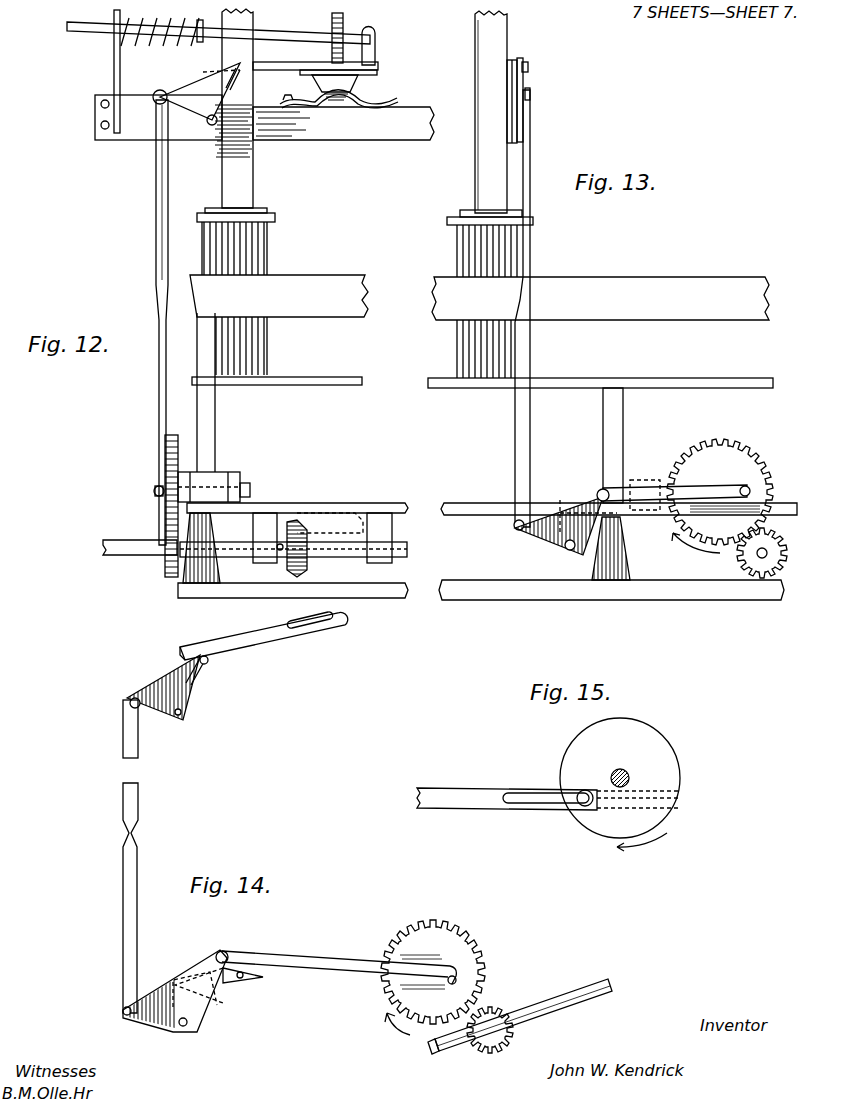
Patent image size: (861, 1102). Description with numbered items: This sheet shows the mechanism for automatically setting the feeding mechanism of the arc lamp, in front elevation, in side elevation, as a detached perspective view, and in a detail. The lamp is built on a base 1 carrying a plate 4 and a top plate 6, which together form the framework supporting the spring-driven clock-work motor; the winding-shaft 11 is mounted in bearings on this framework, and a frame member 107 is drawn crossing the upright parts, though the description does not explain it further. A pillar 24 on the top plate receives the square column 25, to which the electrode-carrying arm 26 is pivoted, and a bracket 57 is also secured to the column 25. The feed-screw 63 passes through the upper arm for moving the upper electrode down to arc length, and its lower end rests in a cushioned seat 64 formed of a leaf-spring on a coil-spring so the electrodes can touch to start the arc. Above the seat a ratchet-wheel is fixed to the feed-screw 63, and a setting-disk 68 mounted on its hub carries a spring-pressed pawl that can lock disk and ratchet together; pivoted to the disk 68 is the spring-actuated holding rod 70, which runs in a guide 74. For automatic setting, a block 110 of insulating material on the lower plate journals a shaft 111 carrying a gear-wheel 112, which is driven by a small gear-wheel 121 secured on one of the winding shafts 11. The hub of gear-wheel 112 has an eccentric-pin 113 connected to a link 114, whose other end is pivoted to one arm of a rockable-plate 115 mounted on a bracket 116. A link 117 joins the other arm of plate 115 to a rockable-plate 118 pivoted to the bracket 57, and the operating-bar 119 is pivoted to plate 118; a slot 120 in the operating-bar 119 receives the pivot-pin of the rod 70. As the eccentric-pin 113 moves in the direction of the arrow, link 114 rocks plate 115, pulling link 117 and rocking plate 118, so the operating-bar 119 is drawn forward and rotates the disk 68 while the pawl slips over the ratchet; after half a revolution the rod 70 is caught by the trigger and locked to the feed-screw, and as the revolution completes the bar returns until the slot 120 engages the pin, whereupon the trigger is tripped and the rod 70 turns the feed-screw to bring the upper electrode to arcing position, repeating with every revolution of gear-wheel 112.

In FIG. 12, the base 1 is at (203, 607).
In FIG. 13, the base 1 is at (557, 627).
In FIG. 12, the plate 4 is at (362, 503).
In FIG. 13, the plate 4 is at (462, 503).
In FIG. 12, the top plate 6 is at (309, 386).
In FIG. 13, the top plate 6 is at (562, 388).
In FIG. 14, the winding-shaft 11 is at (578, 1000).
In FIG. 15, the winding-shaft 11 is at (617, 773).
In FIG. 12, the pillar 24 is at (253, 260).
In FIG. 13, the pillar 24 is at (500, 253).
In FIG. 12, the square column 25 is at (242, 187).
In FIG. 13, the square column 25 is at (480, 170).
In FIG. 12, the arm 26 is at (360, 135).
In FIG. 12, the bracket 57 is at (128, 137).
In FIG. 13, the bracket 57 is at (530, 141).
In FIG. 12, the feed-screw 63 is at (345, 17).
In FIG. 12, the cushioned seat 64 is at (360, 97).
In FIG. 15, the setting-disk 68 is at (663, 760).
In FIG. 12, the spring-actuated holding rod 70 is at (207, 42).
In FIG. 12, the guide 74 is at (114, 50).
In FIG. 12, the bar 107 is at (279, 296).
In FIG. 13, the bar 107 is at (600, 298).
In FIG. 12, the block 110 is at (224, 482).
In FIG. 12, the shaft 111 is at (252, 491).
In FIG. 12, the gear-wheel 112 is at (165, 440).
In FIG. 13, the gear-wheel 112 is at (723, 458).
In FIG. 14, the gear-wheel 112 is at (448, 918).
In FIG. 13, the eccentric-pin 113 is at (747, 490).
In FIG. 14, the eccentric-pin 113 is at (437, 980).
In FIG. 12, the link 114 is at (157, 490).
In FIG. 13, the link 114 is at (642, 488).
In FIG. 14, the link 114 is at (328, 972).
In FIG. 13, the rockable-plate 115 is at (560, 503).
In FIG. 14, the rockable-plate 115 is at (168, 983).
In FIG. 13, the bracket 116 is at (562, 555).
In FIG. 14, the bracket 116 is at (188, 1030).
In FIG. 12, the link 117 is at (157, 245).
In FIG. 13, the link 117 is at (527, 192).
In FIG. 14, the link 117 is at (134, 898).
In FIG. 12, the rockable-plate 118 is at (152, 682).
In FIG. 13, the rockable-plate 118 is at (520, 82).
In FIG. 12, the operating-bar 119 is at (270, 63).
In FIG. 13, the operating-bar 119 is at (517, 58).
In FIG. 15, the operating-bar 119 is at (472, 792).
In FIG. 12, the slot 120 is at (333, 623).
In FIG. 15, the slot 120 is at (528, 804).
In FIG. 12, the small gear-wheel 121 is at (167, 570).
In FIG. 13, the small gear-wheel 121 is at (740, 560).
In FIG. 14, the small gear-wheel 121 is at (502, 1067).